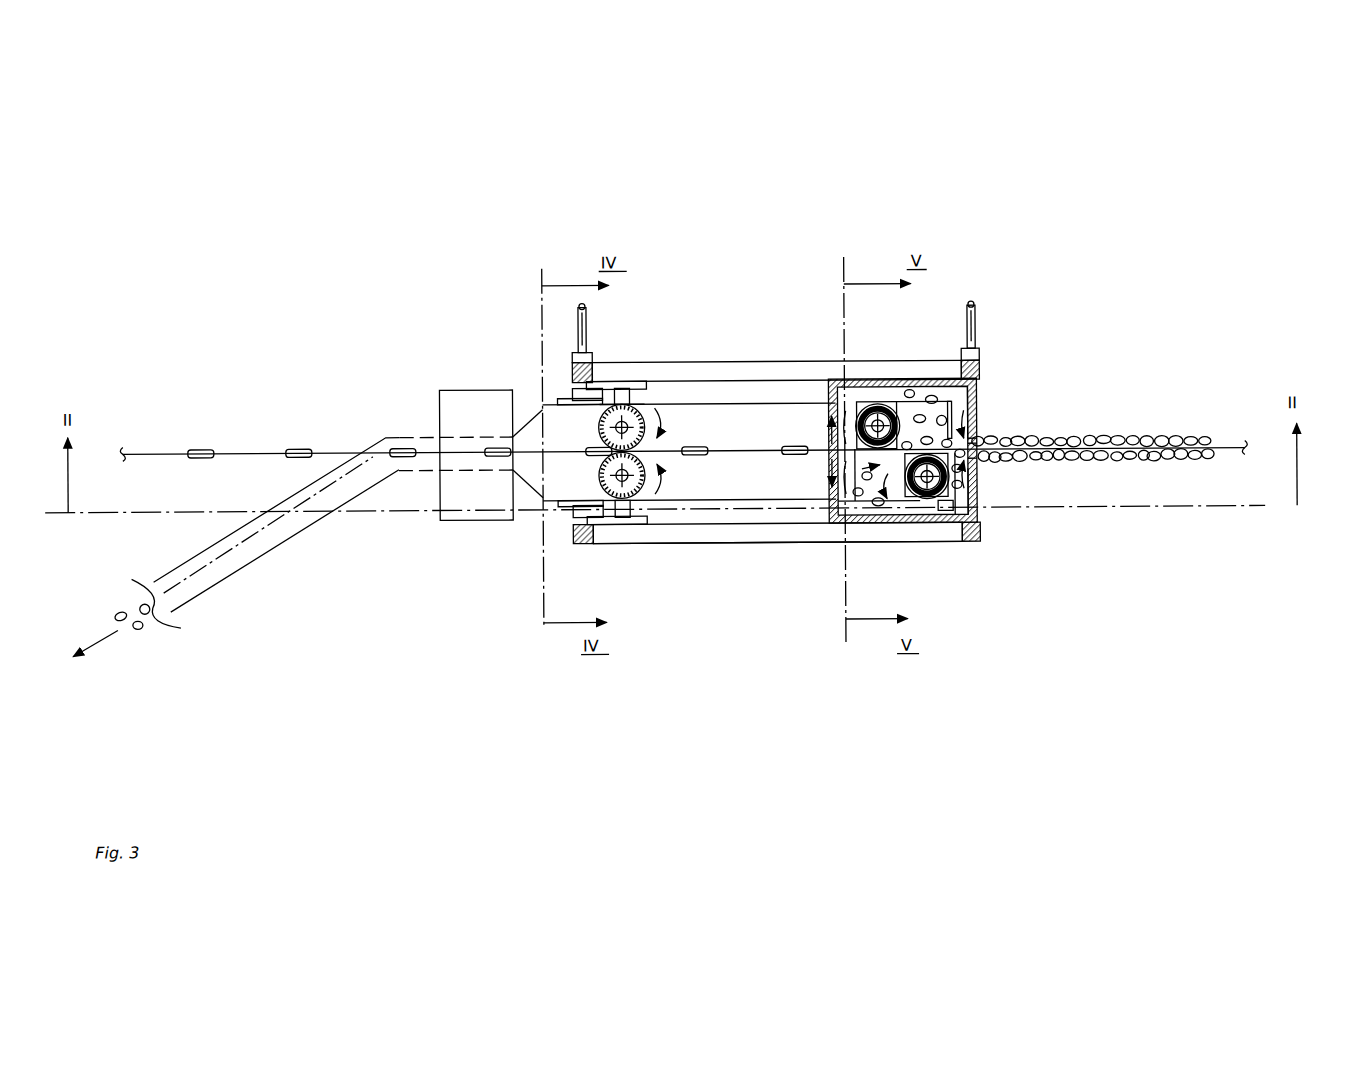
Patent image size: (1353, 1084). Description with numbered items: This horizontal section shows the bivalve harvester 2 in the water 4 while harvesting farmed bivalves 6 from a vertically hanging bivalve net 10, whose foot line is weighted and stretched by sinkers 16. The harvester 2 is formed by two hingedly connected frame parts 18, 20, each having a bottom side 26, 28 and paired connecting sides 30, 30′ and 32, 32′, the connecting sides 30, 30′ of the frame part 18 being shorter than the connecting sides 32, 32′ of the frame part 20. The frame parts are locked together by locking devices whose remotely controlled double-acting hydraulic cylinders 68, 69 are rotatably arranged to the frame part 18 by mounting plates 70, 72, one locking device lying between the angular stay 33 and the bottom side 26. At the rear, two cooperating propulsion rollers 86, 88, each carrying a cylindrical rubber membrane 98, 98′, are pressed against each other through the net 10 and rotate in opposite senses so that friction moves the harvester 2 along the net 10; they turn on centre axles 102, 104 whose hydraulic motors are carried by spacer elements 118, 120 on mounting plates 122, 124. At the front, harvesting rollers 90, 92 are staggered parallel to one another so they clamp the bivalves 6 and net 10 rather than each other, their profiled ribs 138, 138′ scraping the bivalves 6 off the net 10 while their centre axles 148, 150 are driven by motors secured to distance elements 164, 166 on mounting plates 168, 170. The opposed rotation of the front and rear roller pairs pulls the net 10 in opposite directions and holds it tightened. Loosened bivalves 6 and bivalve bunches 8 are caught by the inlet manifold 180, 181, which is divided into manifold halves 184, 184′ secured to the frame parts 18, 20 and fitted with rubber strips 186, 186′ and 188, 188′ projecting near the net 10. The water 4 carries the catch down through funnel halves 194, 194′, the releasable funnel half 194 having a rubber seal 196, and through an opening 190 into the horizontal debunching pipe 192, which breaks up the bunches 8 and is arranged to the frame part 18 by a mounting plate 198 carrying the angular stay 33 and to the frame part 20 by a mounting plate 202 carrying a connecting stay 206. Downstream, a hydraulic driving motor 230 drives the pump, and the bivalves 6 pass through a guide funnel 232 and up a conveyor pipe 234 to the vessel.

The bivalve harvester 2 is at (755, 262).
The water 4 is at (258, 375).
The bivalves 6 is at (132, 627).
The bivalve bunches 8 is at (1152, 440).
The bivalve net 10 is at (160, 451).
The sinkers 16 is at (200, 447).
The frame part 18 is at (769, 352).
The frame part 20 is at (751, 562).
The bottom side 26 is at (727, 370).
The bottom side 28 is at (693, 544).
The connecting side 30 is at (570, 372).
The connecting side 30′ is at (982, 367).
The connecting side 32 is at (585, 545).
The connecting side 32′ is at (985, 544).
The angular stay 33 is at (570, 385).
The hydraulic cylinder 68 is at (590, 330).
The hydraulic cylinder 69 is at (977, 320).
The mounting plate 70 is at (590, 355).
The mounting plate 72 is at (980, 355).
The propulsion roller 86 is at (602, 432).
The propulsion roller 88 is at (602, 472).
The harvesting roller 90 is at (842, 380).
The harvesting roller 92 is at (885, 545).
The rubber membrane 98 is at (650, 442).
The rubber membrane 98′ is at (655, 460).
The centre axle 102 is at (602, 415).
The centre axle 104 is at (618, 482).
The spacer element 118 is at (625, 398).
The spacer element 120 is at (657, 544).
The mounting plate 122 is at (625, 383).
The mounting plate 124 is at (610, 545).
The profiled ribs 138 is at (858, 405).
The profiled ribs 138′ is at (853, 545).
The centre axle 148 is at (905, 400).
The centre axle 150 is at (908, 545).
The distance element 164 is at (880, 404).
The distance element 166 is at (937, 545).
The mounting plate 168 is at (890, 395).
The mounting plate 170 is at (960, 545).
The inlet manifold 180 is at (820, 415).
The strand path arrow 181 is at (794, 445).
The manifold half 184 is at (985, 390).
The manifold half 184′ is at (980, 517).
The rubber strip 186 is at (830, 430).
The rubber strip 186′ is at (980, 427).
The rubber strip 188 is at (820, 472).
The rubber strip 188′ is at (980, 470).
The opening 190 is at (830, 487).
The debunching pipe 192 is at (730, 487).
The funnel half 194 is at (980, 412).
The funnel half 194′ is at (980, 487).
The rubber seal 196 is at (980, 418).
The mounting plate 198 is at (570, 397).
The mounting plate 202 is at (540, 497).
The connecting stay 206 is at (560, 510).
The hydraulic driving motor 230 is at (457, 405).
The guide funnel 232 is at (523, 487).
The conveyor pipe 234 is at (203, 587).